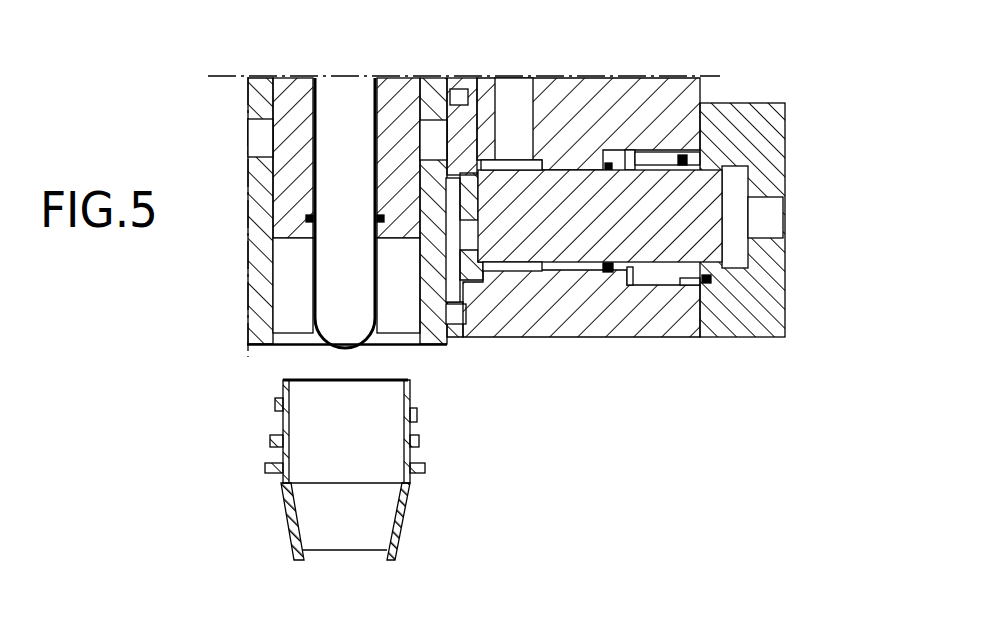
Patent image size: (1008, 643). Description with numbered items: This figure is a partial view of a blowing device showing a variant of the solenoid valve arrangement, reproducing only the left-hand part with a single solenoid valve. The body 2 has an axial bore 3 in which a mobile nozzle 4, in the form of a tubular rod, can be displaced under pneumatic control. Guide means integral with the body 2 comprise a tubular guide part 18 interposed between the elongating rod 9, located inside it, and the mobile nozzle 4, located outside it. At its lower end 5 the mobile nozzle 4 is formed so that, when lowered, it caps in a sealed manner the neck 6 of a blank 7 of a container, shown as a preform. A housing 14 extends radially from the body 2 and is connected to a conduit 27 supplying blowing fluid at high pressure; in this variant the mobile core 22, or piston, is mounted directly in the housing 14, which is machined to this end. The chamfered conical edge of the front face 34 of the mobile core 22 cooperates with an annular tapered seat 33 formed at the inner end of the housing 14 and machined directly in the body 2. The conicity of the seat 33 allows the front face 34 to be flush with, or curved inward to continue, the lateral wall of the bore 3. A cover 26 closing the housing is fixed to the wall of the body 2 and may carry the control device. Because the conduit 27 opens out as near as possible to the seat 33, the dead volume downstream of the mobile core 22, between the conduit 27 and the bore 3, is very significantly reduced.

The body 2 is at (628, 76).
The axial bore 3 is at (470, 279).
The mobile nozzle 4 is at (262, 305).
The lower end 5 is at (430, 312).
The neck 6 is at (273, 421).
The blank 7 is at (425, 444).
The elongating rod 9 is at (349, 92).
The housing 14 is at (577, 270).
The tubular guide part 18 is at (283, 141).
The mobile core 22 is at (556, 218).
The cover 26 is at (748, 133).
The conduit 27 is at (521, 112).
The annular tapered seat 33 is at (484, 275).
The front face 34 is at (472, 77).